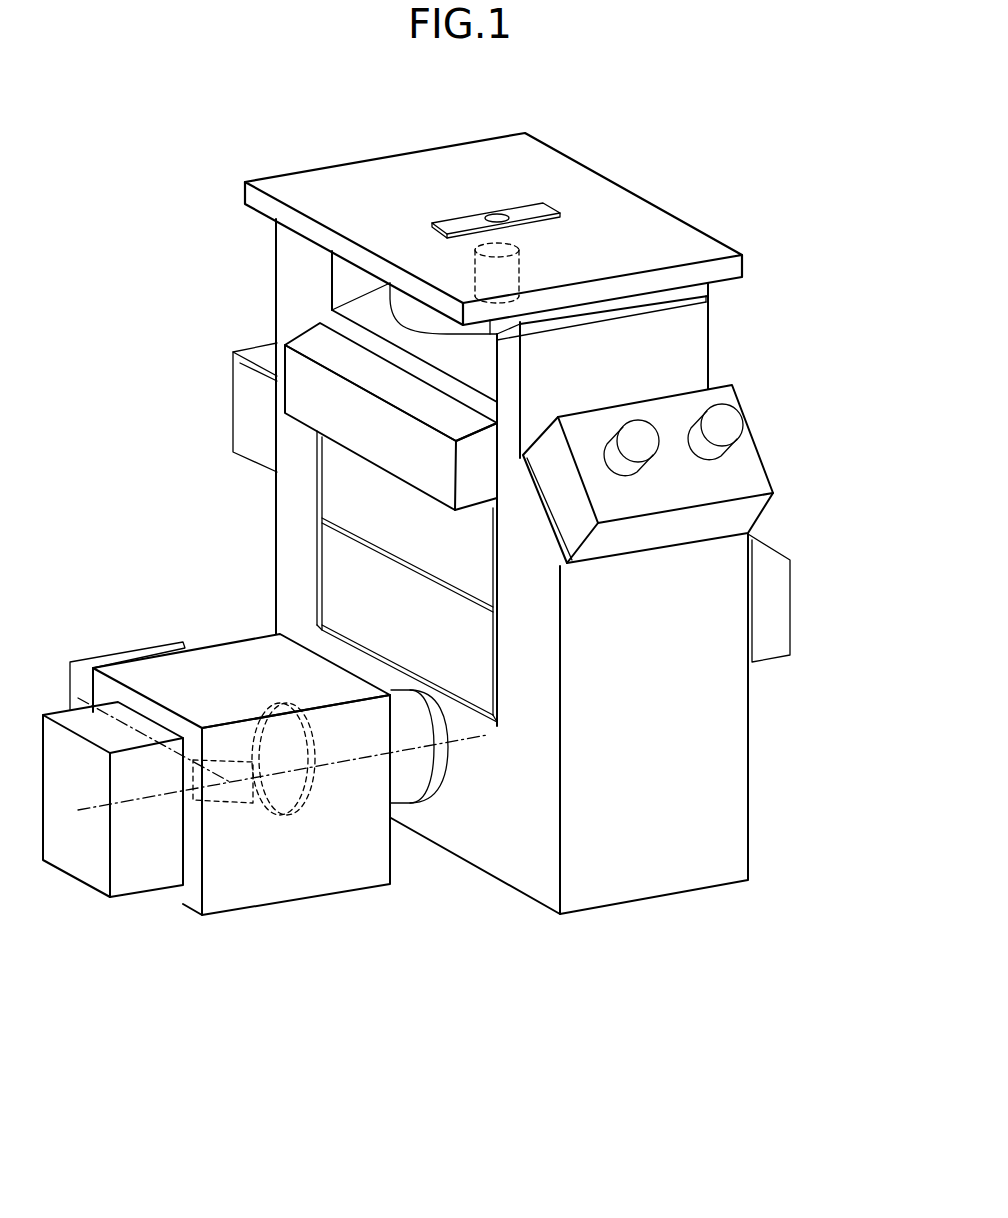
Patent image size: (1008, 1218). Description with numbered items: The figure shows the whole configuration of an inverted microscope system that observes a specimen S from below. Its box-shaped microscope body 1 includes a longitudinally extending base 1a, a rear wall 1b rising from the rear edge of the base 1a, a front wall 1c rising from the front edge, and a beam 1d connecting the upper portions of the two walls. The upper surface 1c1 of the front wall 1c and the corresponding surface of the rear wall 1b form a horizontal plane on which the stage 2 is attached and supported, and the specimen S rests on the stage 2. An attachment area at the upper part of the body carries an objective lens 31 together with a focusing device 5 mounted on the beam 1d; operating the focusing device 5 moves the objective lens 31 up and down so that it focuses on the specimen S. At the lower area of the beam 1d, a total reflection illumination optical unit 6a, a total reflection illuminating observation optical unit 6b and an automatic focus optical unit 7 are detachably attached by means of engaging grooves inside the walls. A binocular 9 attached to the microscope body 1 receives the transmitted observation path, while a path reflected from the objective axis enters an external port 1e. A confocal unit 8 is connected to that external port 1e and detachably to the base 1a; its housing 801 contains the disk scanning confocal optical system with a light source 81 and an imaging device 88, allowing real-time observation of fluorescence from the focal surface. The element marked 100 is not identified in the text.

The microscope body 1 is at (772, 755).
The base 1a is at (628, 887).
The rear wall 1b is at (297, 287).
The front wall 1c is at (698, 338).
The upper surface of the front wall 1c1 is at (710, 285).
The beam 1d is at (438, 382).
The external port 1e is at (444, 787).
The stage 2 is at (636, 213).
The objective lens 31 is at (521, 268).
The focusing device 5 is at (397, 297).
The total reflection illumination optical unit 6a is at (333, 465).
The total reflection illuminating observation optical unit 6b is at (335, 565).
The automatic focus optical unit 7 is at (297, 398).
The confocal unit 8 is at (282, 813).
The light source 81 is at (108, 661).
The imaging device 88 is at (137, 873).
The housing 801 is at (263, 888).
The binocular 9 is at (748, 478).
The sample holder 100 is at (520, 215).
The specimen S is at (496, 214).